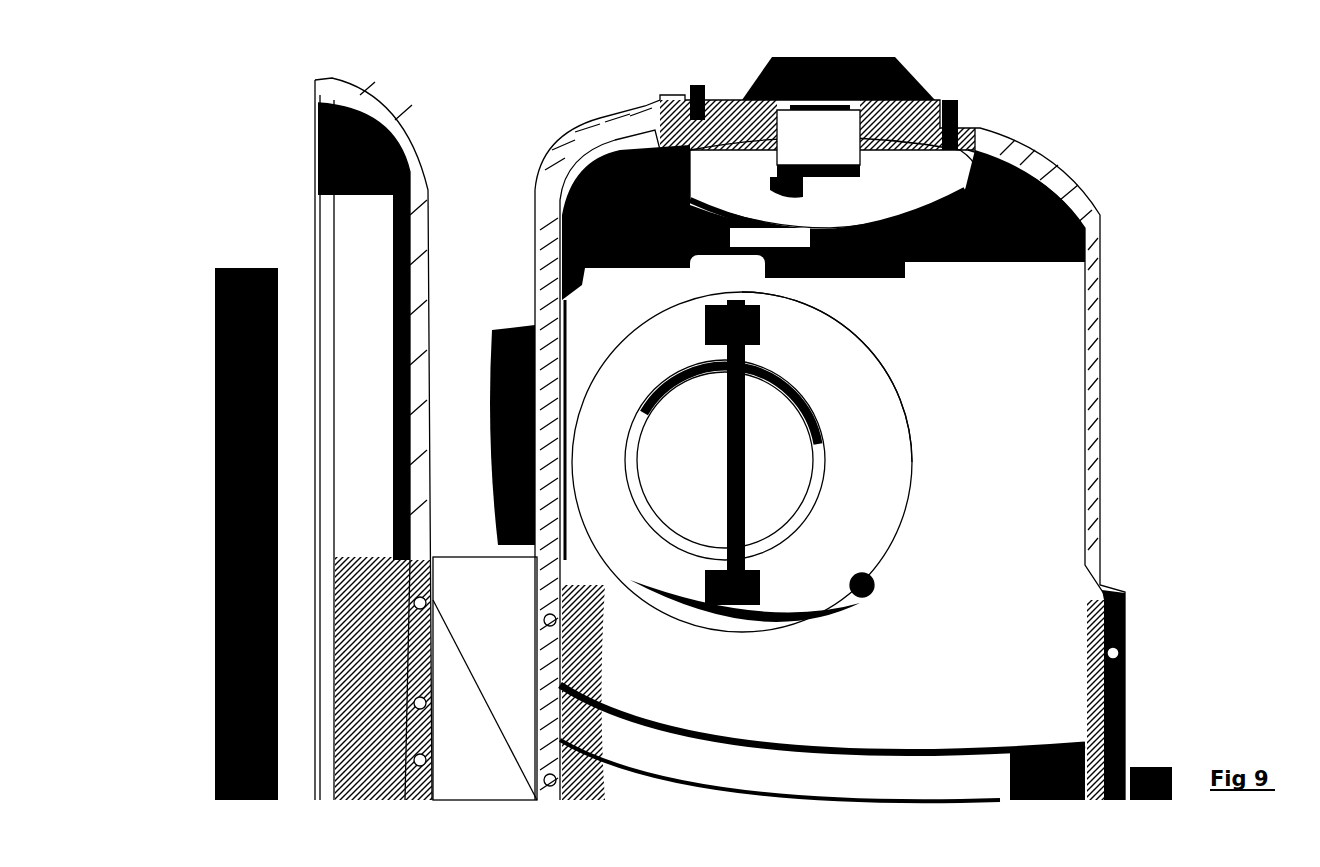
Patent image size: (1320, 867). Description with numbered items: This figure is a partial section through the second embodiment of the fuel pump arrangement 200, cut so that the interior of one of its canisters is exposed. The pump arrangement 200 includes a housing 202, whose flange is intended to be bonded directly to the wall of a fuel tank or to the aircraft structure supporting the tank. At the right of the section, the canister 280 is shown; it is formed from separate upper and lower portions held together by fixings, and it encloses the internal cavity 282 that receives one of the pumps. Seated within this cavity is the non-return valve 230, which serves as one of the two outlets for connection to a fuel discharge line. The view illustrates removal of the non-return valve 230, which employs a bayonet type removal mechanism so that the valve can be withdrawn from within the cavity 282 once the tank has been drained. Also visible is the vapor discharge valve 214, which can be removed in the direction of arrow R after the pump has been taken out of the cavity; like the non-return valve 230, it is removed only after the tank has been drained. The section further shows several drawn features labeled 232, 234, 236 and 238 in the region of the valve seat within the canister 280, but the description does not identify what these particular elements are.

The pump arrangement 200 is at (285, 82).
The housing 202 is at (463, 690).
The vapor discharge valve 214 is at (905, 88).
The canister 280 is at (1102, 215).
The internal cavity 282 is at (1037, 283).
The rod 238 is at (742, 350).
The inner disc 232 is at (775, 460).
The non-return valve 230 is at (948, 518).
The ring surface 234 is at (860, 538).
The bolt 236 is at (872, 585).